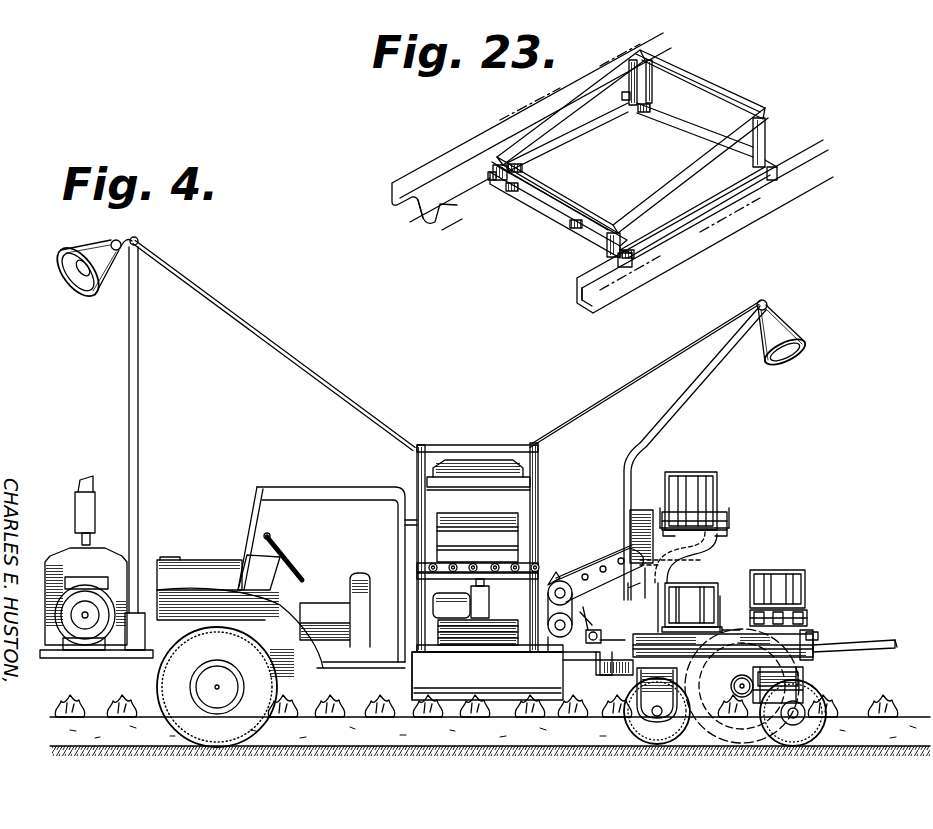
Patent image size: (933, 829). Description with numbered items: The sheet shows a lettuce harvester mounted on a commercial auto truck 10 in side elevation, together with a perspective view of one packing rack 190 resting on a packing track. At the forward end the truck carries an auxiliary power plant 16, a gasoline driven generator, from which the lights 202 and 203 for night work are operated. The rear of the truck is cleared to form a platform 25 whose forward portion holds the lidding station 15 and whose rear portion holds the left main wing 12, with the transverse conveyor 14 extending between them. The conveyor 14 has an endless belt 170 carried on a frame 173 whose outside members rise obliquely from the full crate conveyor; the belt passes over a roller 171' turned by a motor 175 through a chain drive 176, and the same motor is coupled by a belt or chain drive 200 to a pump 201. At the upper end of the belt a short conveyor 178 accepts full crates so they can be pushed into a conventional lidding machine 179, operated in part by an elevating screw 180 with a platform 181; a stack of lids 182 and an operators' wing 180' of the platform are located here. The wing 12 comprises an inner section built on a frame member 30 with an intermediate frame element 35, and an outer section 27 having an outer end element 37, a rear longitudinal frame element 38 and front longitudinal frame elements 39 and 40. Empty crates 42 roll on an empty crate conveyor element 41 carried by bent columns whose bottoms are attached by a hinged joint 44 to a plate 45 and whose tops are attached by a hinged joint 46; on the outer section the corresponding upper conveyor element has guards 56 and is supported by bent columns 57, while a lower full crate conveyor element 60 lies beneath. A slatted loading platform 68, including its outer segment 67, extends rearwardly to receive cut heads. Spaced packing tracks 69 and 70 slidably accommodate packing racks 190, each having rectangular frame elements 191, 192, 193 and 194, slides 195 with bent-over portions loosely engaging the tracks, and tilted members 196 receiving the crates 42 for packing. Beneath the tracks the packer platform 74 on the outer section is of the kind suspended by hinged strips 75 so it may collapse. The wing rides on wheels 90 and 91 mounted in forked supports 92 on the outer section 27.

In FIG. 4, the auto truck 10 is at (230, 551).
In FIG. 4, the main wing 12 is at (787, 561).
In FIG. 4, the transverse conveyor 14 is at (578, 557).
In FIG. 4, the lidding station 15 is at (548, 503).
In FIG. 4, the power plant 16 is at (68, 533).
In FIG. 4, the platform 25 is at (609, 707).
In FIG. 4, the outer wing section 27 is at (830, 660).
In FIG. 23, the frame member 30 is at (404, 206).
In FIG. 23, the intermediate frame element 35 is at (578, 308).
In FIG. 4, the outer end element 37 is at (820, 638).
In FIG. 4, the longitudinally disposed frame element 38 is at (848, 630).
In FIG. 4, the longitudinal frame element 39 is at (616, 668).
In FIG. 4, the longitudinal frame element 40 is at (666, 596).
In FIG. 4, the empty crate conveyor element 41 is at (745, 522).
In FIG. 4, the empty crates 42 is at (712, 470).
In FIG. 4, the hinged joint 44 is at (645, 600).
In FIG. 4, the plate 45 is at (606, 645).
In FIG. 4, the hinged joint 46 is at (728, 540).
In FIG. 4, the guards 56 is at (656, 512).
In FIG. 4, the bent columns 57 is at (712, 540).
In FIG. 4, the lower full crate conveyor element 60 is at (732, 603).
In FIG. 4, the loading platform segment 67 is at (896, 641).
In FIG. 4, the loading platform 68 is at (888, 634).
In FIG. 23, the packing track 69 is at (458, 212).
In FIG. 23, the packing track 70 is at (578, 280).
In FIG. 4, the platform 74 is at (762, 710).
In FIG. 4, the strips 75 is at (806, 690).
In FIG. 4, the wheel 90 is at (655, 722).
In FIG. 4, the wheel 91 is at (802, 713).
In FIG. 4, the forked supports 92 is at (652, 728).
In FIG. 4, the endless belt 170 is at (582, 575).
In FIG. 4, the roller 171' is at (569, 557).
In FIG. 4, the frame 173 is at (588, 562).
In FIG. 4, the motor 175 is at (578, 638).
In FIG. 4, the chain drive 176 is at (556, 630).
In FIG. 4, the short conveyor 178 is at (546, 554).
In FIG. 4, the lidding machine 179 is at (501, 453).
In FIG. 4, the elevating screw 180 is at (483, 602).
In FIG. 4, the wing 180' is at (478, 649).
In FIG. 4, the platform 181 is at (486, 583).
In FIG. 4, the stack of lids 182 is at (468, 661).
In FIG. 23, the packing rack 190 is at (751, 93).
In FIG. 4, the packing rack 190 is at (816, 619).
In FIG. 23, the frame element 191 is at (560, 232).
In FIG. 23, the frame element 192 is at (680, 125).
In FIG. 23, the frame element 193 is at (588, 130).
In FIG. 23, the frame element 194 is at (750, 176).
In FIG. 23, the slides 195 is at (488, 162).
In FIG. 23, the members 196 is at (638, 52).
In FIG. 4, the belt or chain drive 200 is at (586, 660).
In FIG. 4, the pump 201 is at (602, 650).
In FIG. 4, the light 202 is at (96, 294).
In FIG. 4, the light 203 is at (802, 330).